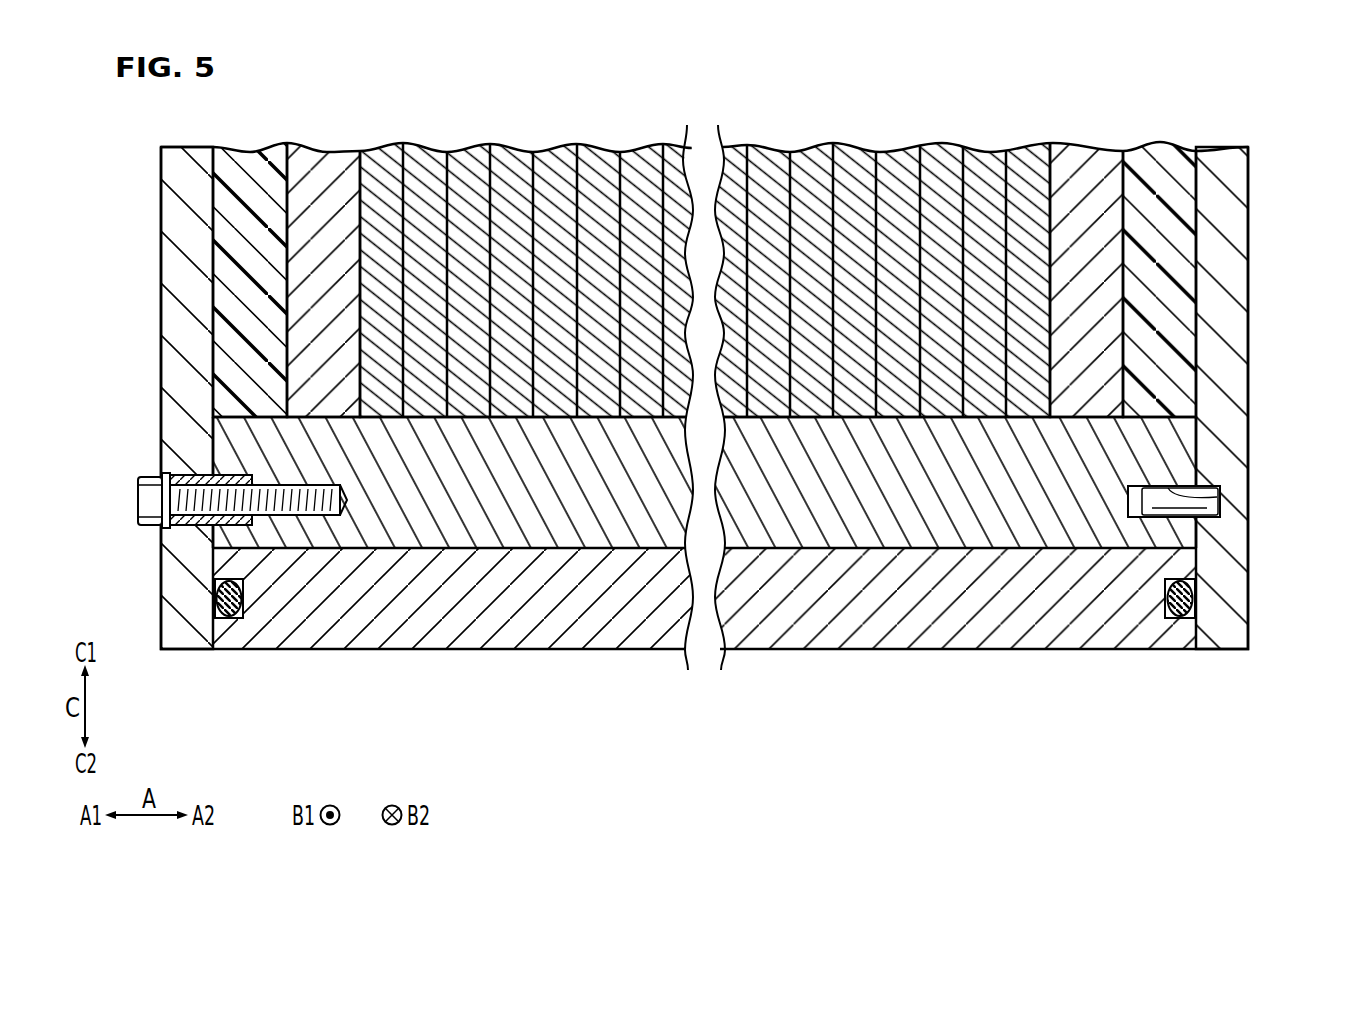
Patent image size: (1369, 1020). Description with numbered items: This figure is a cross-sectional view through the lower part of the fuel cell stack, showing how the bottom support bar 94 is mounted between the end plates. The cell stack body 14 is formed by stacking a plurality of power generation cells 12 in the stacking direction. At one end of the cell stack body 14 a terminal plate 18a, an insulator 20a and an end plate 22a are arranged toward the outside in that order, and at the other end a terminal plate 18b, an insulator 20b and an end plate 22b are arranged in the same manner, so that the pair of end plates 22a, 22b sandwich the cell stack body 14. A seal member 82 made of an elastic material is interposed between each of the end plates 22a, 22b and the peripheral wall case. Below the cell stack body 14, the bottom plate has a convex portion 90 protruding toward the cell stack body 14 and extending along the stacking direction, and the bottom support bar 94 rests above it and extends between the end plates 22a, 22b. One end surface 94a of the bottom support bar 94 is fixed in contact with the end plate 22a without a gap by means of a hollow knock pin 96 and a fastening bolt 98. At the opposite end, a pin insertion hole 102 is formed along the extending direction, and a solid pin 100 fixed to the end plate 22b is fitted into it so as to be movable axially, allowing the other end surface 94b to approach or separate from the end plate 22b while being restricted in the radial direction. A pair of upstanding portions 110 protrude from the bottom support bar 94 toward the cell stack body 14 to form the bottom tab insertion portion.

The power generation cell 12 is at (424, 160).
The cell stack body 14 is at (883, 117).
The terminal plate 18a is at (323, 155).
The terminal plate 18b is at (1083, 153).
The insulator 20a is at (248, 160).
The insulator 20b is at (1160, 155).
The end plate 22a is at (178, 211).
The end plate 22b is at (1240, 194).
The seal member 82 is at (233, 607).
The convex portion 90 is at (208, 560).
The bottom support bar 94 is at (490, 542).
The one end surface 94a is at (208, 435).
The other end surface 94b is at (1198, 437).
The hollow knock pin 96 is at (182, 473).
The fastening bolt 98 is at (180, 497).
The solid pin 100 is at (1160, 504).
The pin insertion hole 102 is at (1177, 498).
The upstanding portion 110 is at (409, 497).